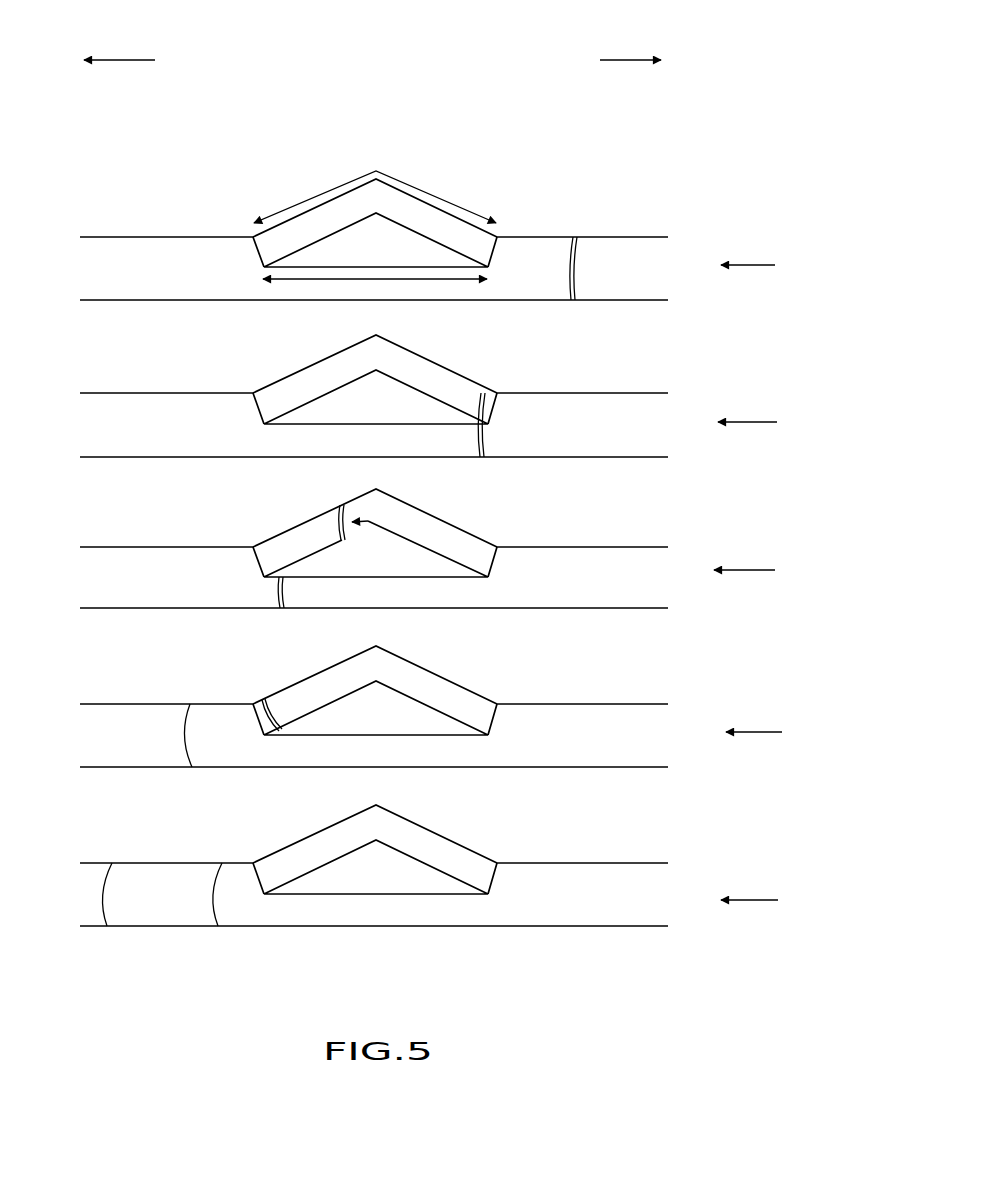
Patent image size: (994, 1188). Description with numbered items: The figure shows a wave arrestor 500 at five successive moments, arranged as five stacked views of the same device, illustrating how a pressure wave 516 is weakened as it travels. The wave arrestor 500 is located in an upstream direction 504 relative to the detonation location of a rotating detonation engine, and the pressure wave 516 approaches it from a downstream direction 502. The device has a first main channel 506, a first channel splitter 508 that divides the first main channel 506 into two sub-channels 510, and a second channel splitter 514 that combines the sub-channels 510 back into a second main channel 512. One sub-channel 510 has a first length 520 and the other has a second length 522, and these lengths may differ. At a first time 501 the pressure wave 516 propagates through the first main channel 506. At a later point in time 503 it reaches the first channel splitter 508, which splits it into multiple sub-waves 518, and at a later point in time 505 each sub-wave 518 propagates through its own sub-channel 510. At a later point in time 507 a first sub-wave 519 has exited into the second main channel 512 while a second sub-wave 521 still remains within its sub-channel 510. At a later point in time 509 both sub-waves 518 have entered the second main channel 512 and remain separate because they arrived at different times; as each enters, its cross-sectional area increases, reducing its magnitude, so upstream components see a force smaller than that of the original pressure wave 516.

The wave arrestor 500 is at (373, 71).
The first time 501 is at (765, 266).
The downstream direction 502 is at (624, 59).
The later point in time 503 is at (764, 422).
The upstream direction 504 is at (120, 59).
The later point in time 505 is at (762, 570).
The first main channel 506 is at (626, 245).
The later point in time 507 is at (772, 732).
The first channel splitter 508 is at (489, 267).
The later point in time 509 is at (767, 900).
The sub-channels 510 is at (435, 277).
The second main channel 512 is at (121, 250).
The second channel splitter 514 is at (262, 266).
The pressure wave 516 is at (576, 273).
The sub-waves 518 is at (288, 600).
The first sub-wave 519 is at (185, 752).
The first length 520 is at (334, 278).
The second sub-wave 521 is at (275, 708).
The second length 522 is at (298, 203).